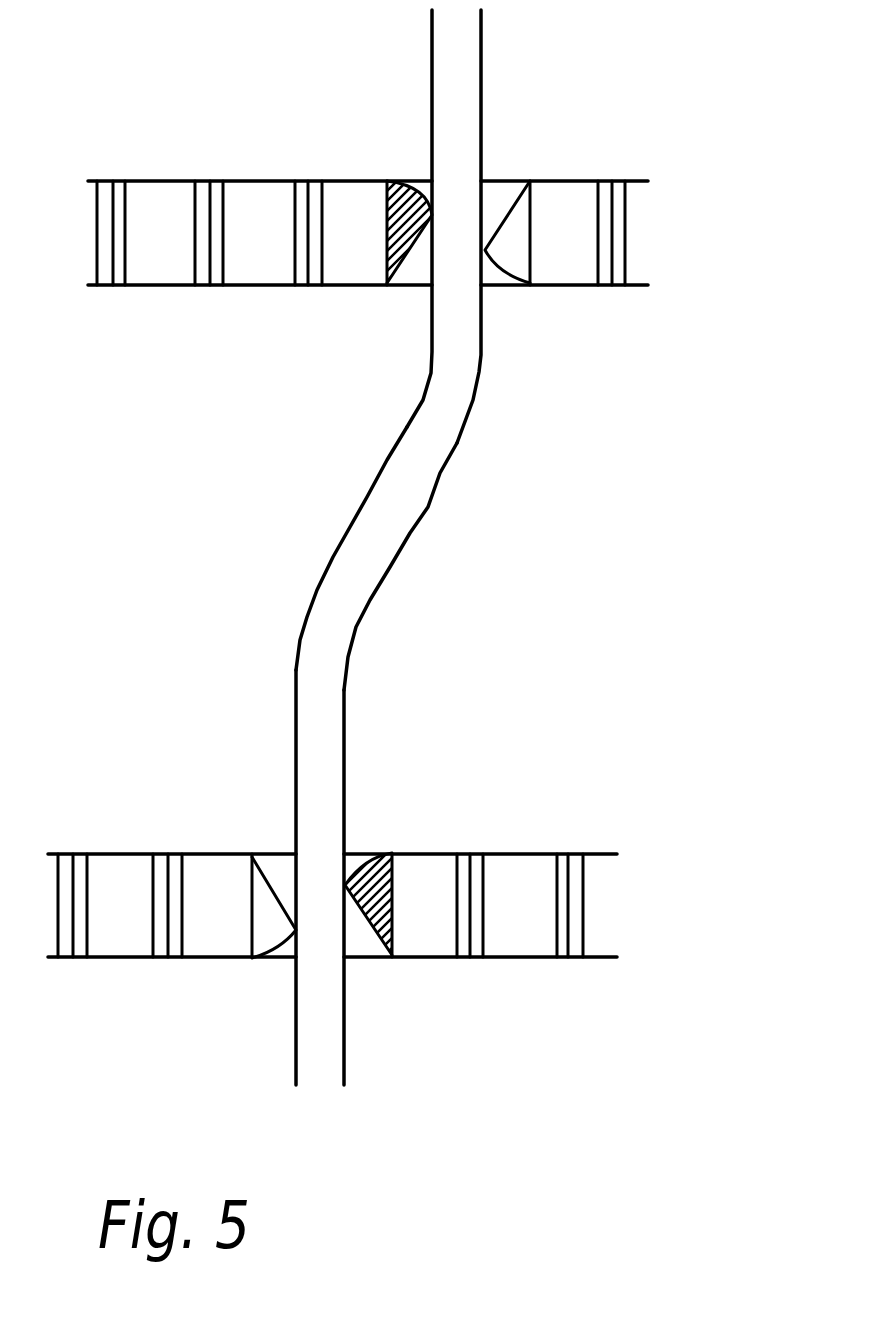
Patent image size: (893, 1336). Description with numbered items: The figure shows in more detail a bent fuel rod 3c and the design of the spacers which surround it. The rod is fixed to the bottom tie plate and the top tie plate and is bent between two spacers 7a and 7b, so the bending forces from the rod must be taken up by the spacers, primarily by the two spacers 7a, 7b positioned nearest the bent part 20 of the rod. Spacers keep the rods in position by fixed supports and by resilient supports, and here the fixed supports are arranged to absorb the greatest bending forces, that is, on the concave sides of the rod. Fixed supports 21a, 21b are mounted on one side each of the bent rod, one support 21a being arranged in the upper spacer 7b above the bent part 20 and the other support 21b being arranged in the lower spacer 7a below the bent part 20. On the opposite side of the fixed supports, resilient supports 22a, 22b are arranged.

The bent fuel rod 3c is at (469, 547).
The spacer 7a is at (332, 909).
The spacer 7b is at (368, 239).
The bent part 20 is at (428, 507).
The fixed support 21a is at (407, 190).
The fixed support 21b is at (370, 853).
The resilient support 22a is at (512, 258).
The resilient support 22b is at (272, 930).